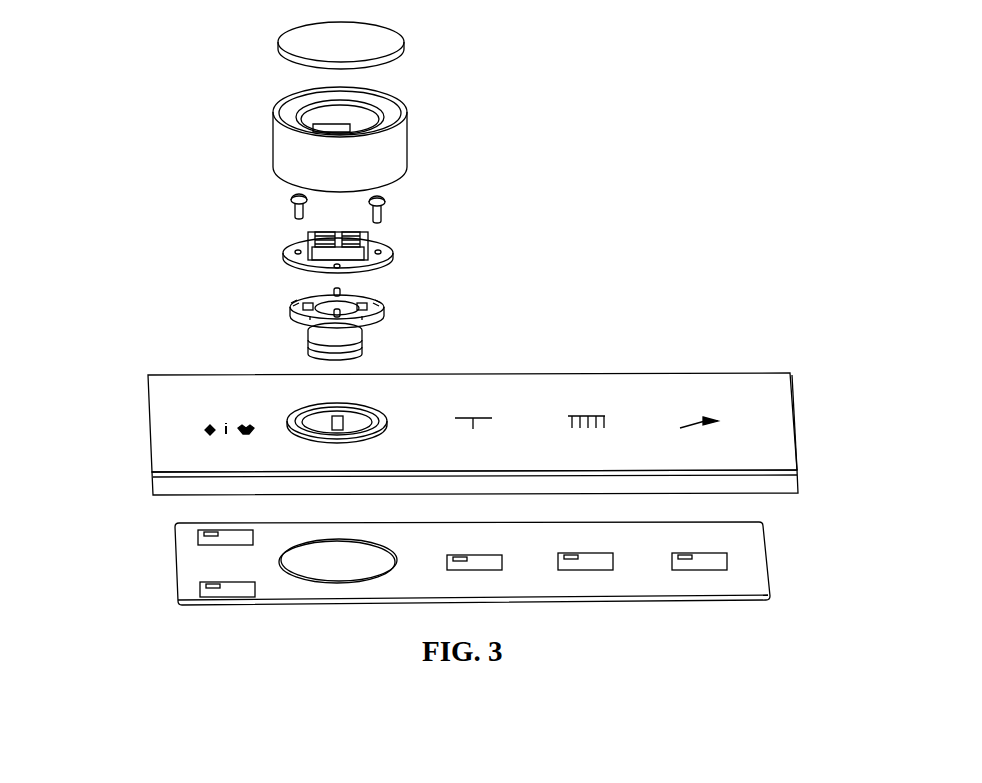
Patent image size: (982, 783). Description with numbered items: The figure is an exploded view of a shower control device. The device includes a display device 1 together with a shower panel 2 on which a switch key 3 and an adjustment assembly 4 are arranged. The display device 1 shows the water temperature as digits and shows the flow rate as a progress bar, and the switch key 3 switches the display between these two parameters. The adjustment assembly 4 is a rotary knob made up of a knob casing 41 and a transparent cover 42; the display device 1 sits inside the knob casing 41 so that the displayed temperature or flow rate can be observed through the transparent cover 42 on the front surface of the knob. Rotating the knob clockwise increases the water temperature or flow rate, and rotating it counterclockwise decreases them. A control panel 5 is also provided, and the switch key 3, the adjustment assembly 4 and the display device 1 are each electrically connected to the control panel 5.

The display device 1 is at (375, 241).
The shower panel 2 is at (460, 389).
The switch key 3 is at (221, 415).
The adjustment assembly 4 is at (405, 100).
The knob casing 41 is at (400, 152).
The transparent cover 42 is at (379, 39).
The control panel 5 is at (759, 576).